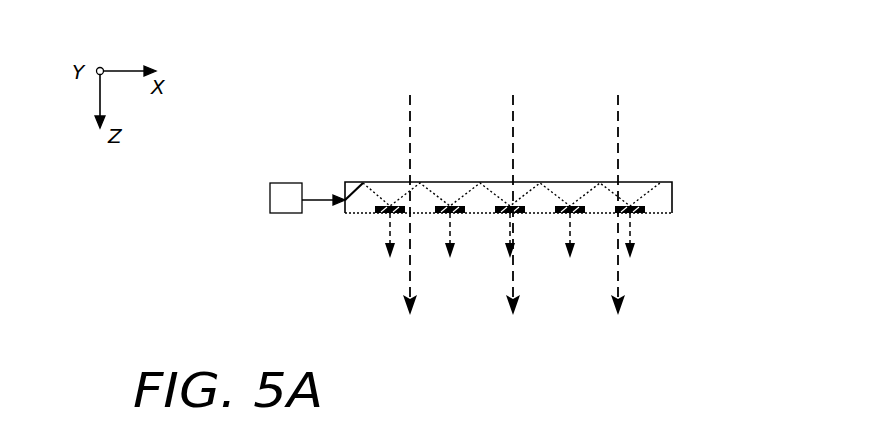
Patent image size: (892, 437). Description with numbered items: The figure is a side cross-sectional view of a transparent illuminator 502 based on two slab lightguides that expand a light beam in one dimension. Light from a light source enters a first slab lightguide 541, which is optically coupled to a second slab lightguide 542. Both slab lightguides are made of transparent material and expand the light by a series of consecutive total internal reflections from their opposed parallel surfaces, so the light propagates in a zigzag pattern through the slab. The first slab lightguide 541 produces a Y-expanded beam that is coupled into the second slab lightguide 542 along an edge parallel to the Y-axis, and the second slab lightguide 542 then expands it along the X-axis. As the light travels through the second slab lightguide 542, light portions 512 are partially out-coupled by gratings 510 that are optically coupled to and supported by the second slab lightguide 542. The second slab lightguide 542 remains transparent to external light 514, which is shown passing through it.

The illuminator 502 is at (697, 81).
The gratings 510 is at (450, 206).
The light portions 512 is at (388, 232).
The external light 514 is at (393, 95).
The first slab lightguide 541 is at (287, 194).
The second slab lightguide 542 is at (660, 195).